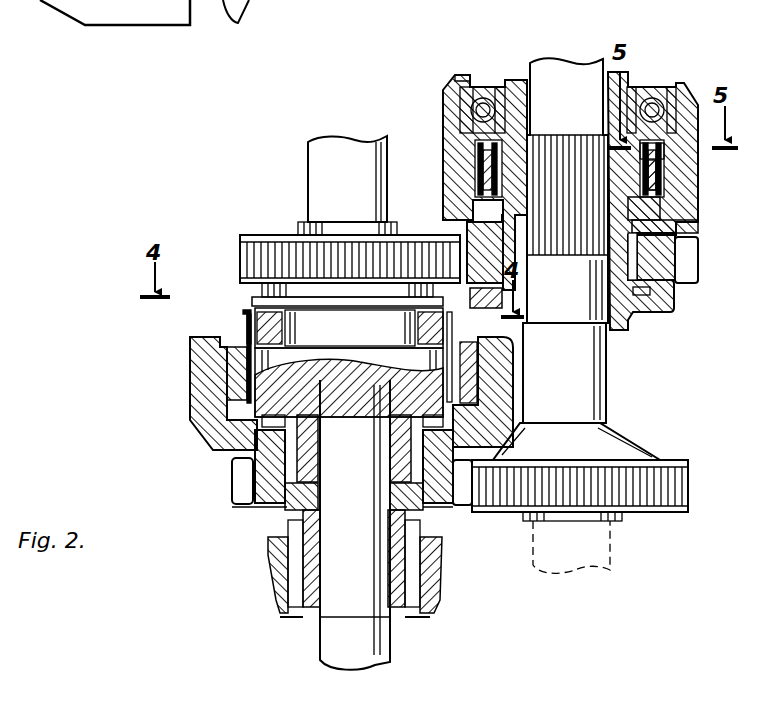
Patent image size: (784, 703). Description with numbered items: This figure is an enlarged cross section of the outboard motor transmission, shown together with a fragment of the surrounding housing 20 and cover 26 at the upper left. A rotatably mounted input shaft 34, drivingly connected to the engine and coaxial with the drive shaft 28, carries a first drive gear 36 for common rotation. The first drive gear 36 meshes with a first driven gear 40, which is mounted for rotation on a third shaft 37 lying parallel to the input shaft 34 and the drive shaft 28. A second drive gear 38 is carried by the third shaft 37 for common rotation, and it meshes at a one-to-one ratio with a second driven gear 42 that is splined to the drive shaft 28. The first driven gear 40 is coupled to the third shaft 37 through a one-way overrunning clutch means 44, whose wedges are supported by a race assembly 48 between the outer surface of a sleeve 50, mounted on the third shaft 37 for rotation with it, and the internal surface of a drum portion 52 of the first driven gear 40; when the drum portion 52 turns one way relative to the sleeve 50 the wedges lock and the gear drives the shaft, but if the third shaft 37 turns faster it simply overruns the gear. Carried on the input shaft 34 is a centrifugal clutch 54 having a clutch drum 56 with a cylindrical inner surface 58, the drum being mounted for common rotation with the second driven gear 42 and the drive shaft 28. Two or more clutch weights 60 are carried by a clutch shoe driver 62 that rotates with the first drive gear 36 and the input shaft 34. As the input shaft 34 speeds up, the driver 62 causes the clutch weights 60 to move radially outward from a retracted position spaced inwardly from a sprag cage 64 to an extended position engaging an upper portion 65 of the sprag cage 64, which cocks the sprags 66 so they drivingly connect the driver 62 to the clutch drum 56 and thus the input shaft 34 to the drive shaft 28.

The housing 20 is at (104, 0).
The cover 26 is at (38, 2).
The drive shaft 28 is at (330, 640).
The input shaft 34 is at (326, 150).
The first drive gear 36 is at (267, 240).
The third shaft 37 is at (565, 65).
The second drive gear 38 is at (672, 462).
The first driven gear 40 is at (660, 254).
The second driven gear 42 is at (238, 472).
The one-way overrunning clutch means 44 is at (660, 210).
The race assembly 48 is at (667, 168).
The sleeve 50 is at (657, 226).
The drum portion 52 is at (665, 182).
The centrifugal clutch 54 is at (437, 247).
The clutch drum 56 is at (213, 385).
The cylindrical inner surface 58 is at (232, 362).
The clutch weights 60 is at (245, 311).
The clutch shoe driver 62 is at (358, 334).
The sprag cage 64 is at (349, 382).
The upper portion 65 is at (478, 320).
The sprags 66 is at (478, 385).